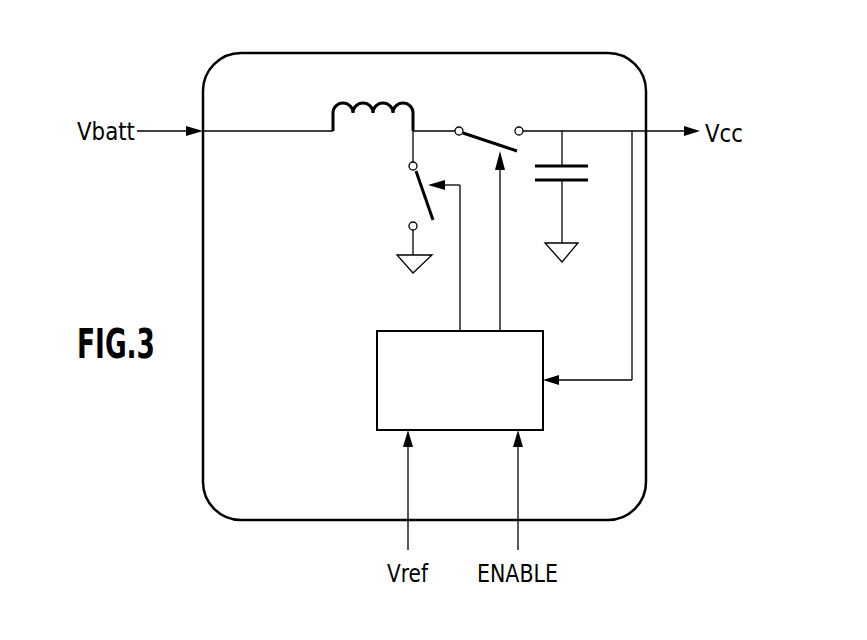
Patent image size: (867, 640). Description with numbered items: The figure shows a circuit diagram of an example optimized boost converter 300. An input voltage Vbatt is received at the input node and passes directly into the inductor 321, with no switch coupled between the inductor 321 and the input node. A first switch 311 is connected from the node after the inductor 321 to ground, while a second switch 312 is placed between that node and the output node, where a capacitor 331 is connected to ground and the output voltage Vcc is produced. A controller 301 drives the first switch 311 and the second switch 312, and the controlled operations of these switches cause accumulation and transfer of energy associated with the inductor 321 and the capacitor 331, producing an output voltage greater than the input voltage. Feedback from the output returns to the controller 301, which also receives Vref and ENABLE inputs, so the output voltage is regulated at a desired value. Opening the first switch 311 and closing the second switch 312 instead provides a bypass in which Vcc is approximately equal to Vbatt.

The optimized boost converter 300 is at (453, 53).
The controller 301 is at (377, 362).
The first switch 311 is at (398, 203).
The second switch 312 is at (489, 112).
The inductor 321 is at (388, 103).
The capacitor 331 is at (572, 183).